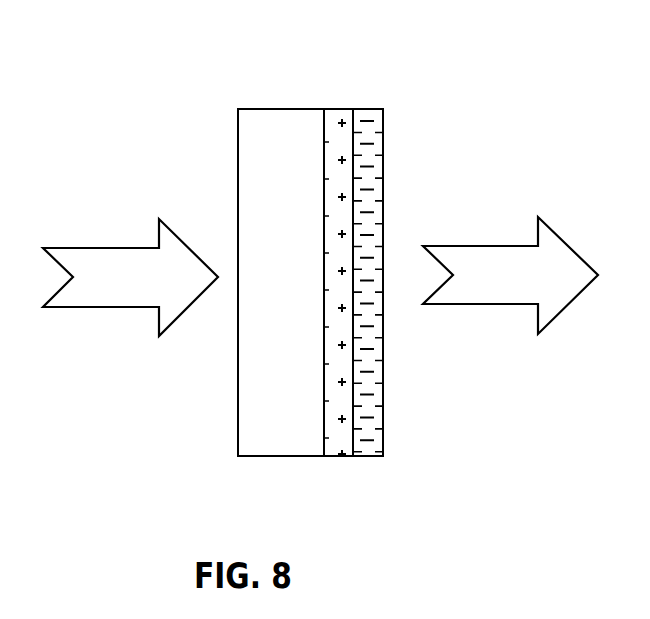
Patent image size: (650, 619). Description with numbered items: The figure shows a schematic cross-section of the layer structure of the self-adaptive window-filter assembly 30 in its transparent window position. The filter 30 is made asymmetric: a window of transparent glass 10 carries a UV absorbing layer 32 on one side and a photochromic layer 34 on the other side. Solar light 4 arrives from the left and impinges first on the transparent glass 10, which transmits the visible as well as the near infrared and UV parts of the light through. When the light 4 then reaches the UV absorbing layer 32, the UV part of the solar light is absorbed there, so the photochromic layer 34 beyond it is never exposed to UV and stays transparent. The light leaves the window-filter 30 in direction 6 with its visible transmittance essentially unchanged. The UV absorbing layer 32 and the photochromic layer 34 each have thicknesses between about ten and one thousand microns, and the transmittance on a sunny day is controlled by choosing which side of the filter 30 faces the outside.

The solar light 4 is at (91, 248).
The direction 6 is at (479, 246).
The transparent glass 10 is at (255, 108).
The self-adaptive visible light filter 30 is at (381, 280).
The UV absorbing layer 32 is at (342, 456).
The photochromic layer 34 is at (367, 112).